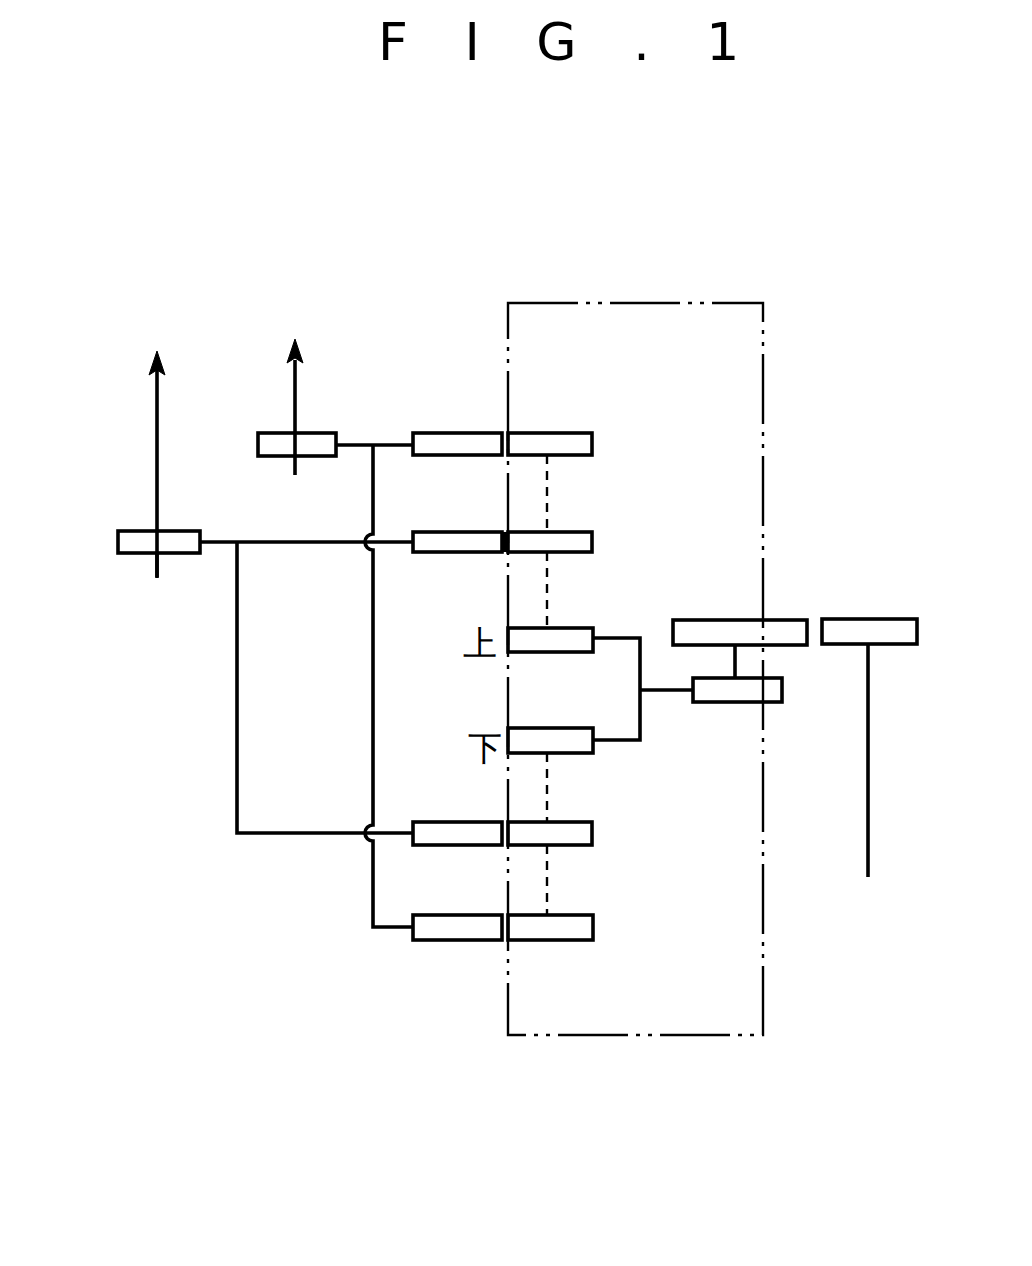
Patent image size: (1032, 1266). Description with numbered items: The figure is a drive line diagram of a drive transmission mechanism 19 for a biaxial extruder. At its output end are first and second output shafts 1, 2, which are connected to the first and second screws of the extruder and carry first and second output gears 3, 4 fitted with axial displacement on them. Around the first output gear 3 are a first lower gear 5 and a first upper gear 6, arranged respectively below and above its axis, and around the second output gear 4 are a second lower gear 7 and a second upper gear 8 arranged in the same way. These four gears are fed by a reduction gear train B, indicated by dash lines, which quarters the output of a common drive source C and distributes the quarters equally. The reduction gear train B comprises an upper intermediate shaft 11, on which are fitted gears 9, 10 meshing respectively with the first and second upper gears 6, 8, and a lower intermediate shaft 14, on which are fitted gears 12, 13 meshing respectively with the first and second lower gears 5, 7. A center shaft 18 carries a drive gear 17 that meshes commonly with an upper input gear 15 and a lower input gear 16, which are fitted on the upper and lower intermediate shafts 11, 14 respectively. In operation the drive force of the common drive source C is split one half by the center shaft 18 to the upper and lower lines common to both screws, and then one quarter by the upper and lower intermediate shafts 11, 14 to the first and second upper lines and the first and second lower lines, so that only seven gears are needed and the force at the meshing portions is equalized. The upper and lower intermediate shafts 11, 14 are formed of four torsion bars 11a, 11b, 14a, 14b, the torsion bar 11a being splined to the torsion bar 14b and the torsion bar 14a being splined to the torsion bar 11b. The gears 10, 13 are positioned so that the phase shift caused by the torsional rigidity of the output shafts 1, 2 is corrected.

The first output shaft 1 is at (297, 385).
The second output shaft 2 is at (153, 413).
The first output gear 3 is at (335, 434).
The second output gear 4 is at (118, 542).
The first lower gear 5 is at (458, 935).
The first upper gear 6 is at (455, 432).
The second lower gear 7 is at (432, 830).
The second upper gear 8 is at (437, 542).
The gear 9 is at (553, 432).
The gear 10 is at (527, 530).
The upper intermediate shaft 11 is at (686, 442).
The torsion bar 11a is at (548, 587).
The torsion bar 11b is at (548, 494).
The gear 12 is at (555, 932).
The gear 13 is at (518, 838).
The lower intermediate shaft 14 is at (705, 792).
The torsion bar 14a is at (548, 778).
The torsion bar 14b is at (548, 874).
The upper input gear 15 is at (510, 650).
The lower input gear 16 is at (540, 728).
The drive gear 17 is at (735, 690).
The center shaft 18 is at (740, 657).
The drive transmission mechanism 19 is at (772, 214).
The reduction gear train B is at (612, 302).
The common drive source C is at (845, 618).